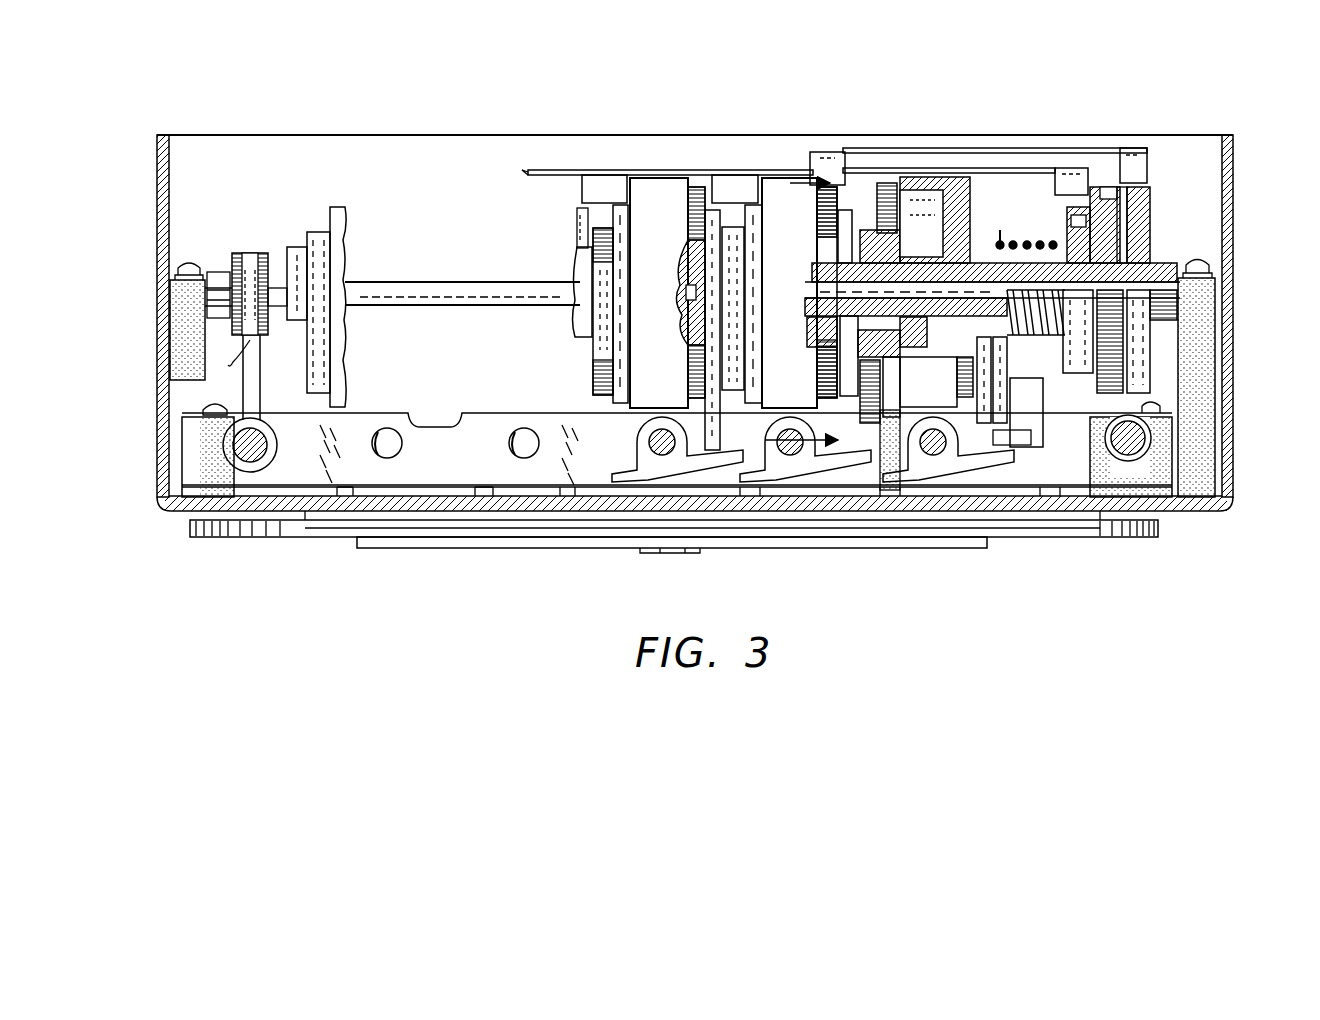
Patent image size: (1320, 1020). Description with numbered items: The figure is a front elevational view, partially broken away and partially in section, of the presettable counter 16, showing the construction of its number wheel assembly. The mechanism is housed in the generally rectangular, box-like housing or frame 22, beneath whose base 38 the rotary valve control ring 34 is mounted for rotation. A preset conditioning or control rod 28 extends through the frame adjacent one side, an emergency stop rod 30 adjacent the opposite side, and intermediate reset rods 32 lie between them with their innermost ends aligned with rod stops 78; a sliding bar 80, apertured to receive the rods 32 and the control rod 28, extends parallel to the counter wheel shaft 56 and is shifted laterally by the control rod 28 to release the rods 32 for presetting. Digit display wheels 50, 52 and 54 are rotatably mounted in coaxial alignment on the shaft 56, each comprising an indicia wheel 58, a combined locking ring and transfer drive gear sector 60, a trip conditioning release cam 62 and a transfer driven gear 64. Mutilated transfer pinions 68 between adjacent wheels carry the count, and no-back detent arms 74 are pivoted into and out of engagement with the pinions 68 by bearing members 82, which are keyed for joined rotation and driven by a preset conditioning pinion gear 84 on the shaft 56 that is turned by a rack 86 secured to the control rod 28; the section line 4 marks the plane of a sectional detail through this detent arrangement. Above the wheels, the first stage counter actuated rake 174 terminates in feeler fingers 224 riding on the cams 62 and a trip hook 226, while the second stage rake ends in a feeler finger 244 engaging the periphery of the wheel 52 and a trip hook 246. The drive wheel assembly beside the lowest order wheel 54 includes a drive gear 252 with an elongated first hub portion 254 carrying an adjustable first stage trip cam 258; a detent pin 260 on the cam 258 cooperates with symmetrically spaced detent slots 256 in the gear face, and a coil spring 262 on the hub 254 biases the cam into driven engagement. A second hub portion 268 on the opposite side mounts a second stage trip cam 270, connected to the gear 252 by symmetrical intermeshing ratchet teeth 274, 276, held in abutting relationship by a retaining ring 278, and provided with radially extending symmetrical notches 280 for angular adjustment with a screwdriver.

The section line 4- 4 is at (788, 314).
The presettable counter 16 is at (1231, 405).
The housing or frame 22 is at (1232, 440).
The preset conditioning or control rod 28 is at (255, 448).
The emergency stop rod 30 is at (1120, 452).
The intermediate reset rods 32 is at (640, 443).
The rotary valve control ring 34 is at (1093, 528).
The base of the housing 38 is at (170, 512).
The digit display wheel 50 is at (648, 176).
The tens wheel 52 is at (770, 176).
The lowest order number wheel 54 is at (935, 170).
The counter wheel shaft 56 is at (448, 282).
The indicia wheel 58 is at (668, 334).
The combined locking ring and transfer drive gear sector 60 is at (596, 383).
The trip conditioning release cam 62 is at (618, 230).
The transfer driven gear 64 is at (696, 187).
The mutilated transfer pinions 68 is at (822, 420).
The no-back detent arms 74 is at (575, 218).
The rod stops 78 is at (387, 440).
The sliding bar 80 is at (436, 437).
The bearing members 82 is at (296, 247).
The preset conditioning pinion gear 84 is at (243, 248).
The rack 86 is at (215, 341).
The first stage counter actuated rake 174 is at (545, 170).
The feeler fingers 224 is at (620, 203).
The trip hook 226 is at (1066, 168).
The feeler finger 244 is at (828, 152).
The trip hook 246 is at (1148, 166).
The drive gear 252 is at (1120, 186).
The elongated first hub portion 254 is at (980, 240).
The detent slots 256 is at (1092, 200).
The first stage trip cam 258 is at (1067, 220).
The detent pin 260 is at (1148, 200).
The coil spring 262 is at (1058, 337).
The second hub portion 268 is at (1212, 250).
The second stage trip cam 270 is at (1150, 343).
The ratchet teeth 274 is at (1097, 383).
The ratchet teeth 276 is at (1160, 352).
The retaining ring 278 is at (1162, 250).
The radially extending symmetrical notches 280 is at (1150, 227).